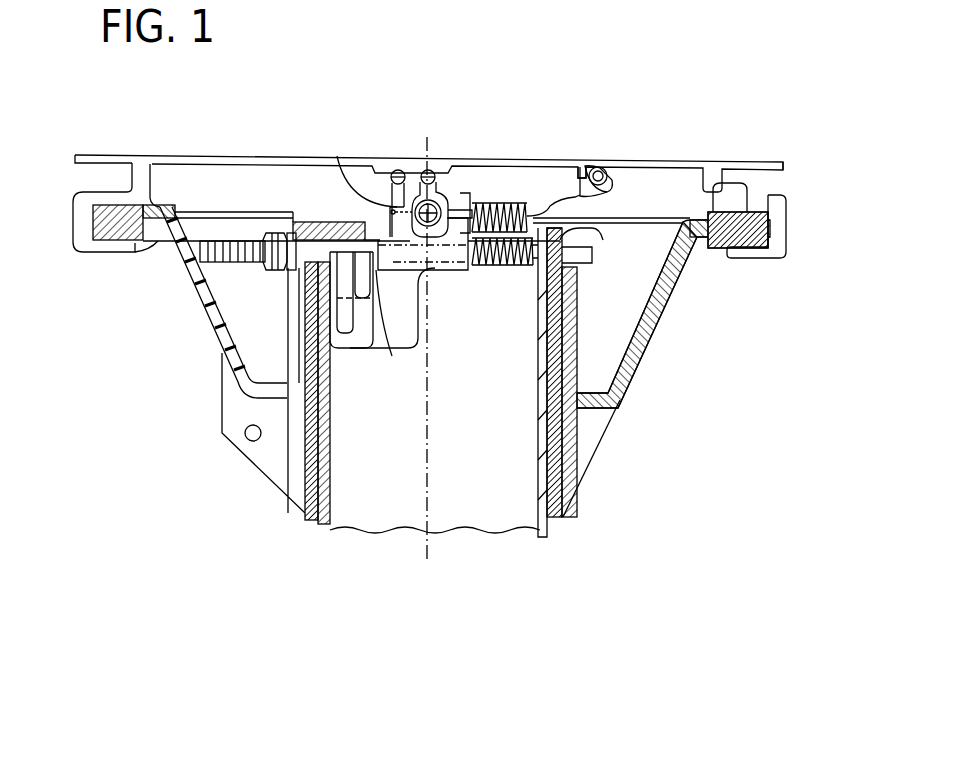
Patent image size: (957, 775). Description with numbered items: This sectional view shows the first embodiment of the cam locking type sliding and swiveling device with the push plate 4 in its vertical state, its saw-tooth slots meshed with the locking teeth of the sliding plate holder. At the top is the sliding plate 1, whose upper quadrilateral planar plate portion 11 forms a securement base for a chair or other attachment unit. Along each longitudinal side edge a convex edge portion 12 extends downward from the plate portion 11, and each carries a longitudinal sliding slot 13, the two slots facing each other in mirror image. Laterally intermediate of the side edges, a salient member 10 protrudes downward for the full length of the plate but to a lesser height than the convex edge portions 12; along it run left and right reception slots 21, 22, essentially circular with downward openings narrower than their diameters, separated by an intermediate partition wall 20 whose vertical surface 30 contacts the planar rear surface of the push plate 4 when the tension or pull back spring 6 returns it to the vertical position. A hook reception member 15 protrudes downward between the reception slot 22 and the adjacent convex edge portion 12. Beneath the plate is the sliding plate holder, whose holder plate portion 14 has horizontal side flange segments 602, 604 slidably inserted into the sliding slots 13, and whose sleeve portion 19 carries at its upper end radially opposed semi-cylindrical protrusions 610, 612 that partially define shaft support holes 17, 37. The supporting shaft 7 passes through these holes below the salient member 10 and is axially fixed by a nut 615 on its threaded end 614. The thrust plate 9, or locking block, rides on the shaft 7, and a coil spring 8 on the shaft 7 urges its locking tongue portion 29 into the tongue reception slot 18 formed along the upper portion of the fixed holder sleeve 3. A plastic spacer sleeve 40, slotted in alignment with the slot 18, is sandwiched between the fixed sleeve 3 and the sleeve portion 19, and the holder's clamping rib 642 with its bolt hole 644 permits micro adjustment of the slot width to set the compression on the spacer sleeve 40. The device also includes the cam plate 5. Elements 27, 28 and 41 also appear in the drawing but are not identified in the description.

The sliding plate 1 is at (686, 160).
The fixed holder sleeve 3 is at (560, 530).
The push plate 4 is at (385, 203).
The cam plate 5 is at (475, 195).
The tension or pull back spring 6 is at (586, 168).
The supporting shaft 7 is at (205, 252).
The coil spring 8 is at (513, 270).
The thrust plate 9 is at (397, 308).
The salient member 10 is at (470, 190).
The planar plate portion 11 is at (758, 162).
The convex edge portion 12 is at (786, 226).
The sliding slot 13 is at (745, 215).
The holder plate portion 14 is at (683, 263).
The hook reception member 15 is at (622, 160).
The shaft support hole 17 is at (585, 268).
The tongue reception slot 18 is at (295, 308).
The sleeve portion 19 is at (598, 425).
The partition wall 20 is at (424, 170).
The reception slot 21 is at (367, 172).
The reception slot 22 is at (445, 195).
The body 27 is at (466, 270).
The spring seat 28 is at (528, 268).
The locking tongue portion 29 is at (345, 348).
The vertical surface 30 is at (410, 172).
The shaft support hole 37 is at (285, 212).
The plastic spacer sleeve 40 is at (318, 505).
The plate 41 is at (380, 337).
The horizontal side flange segment 602 is at (147, 252).
The horizontal side flange segment 604 is at (715, 205).
The semi-cylindrical protrusion 610 is at (343, 222).
The semi-cylindrical protrusion 612 is at (593, 252).
The threaded end 614 is at (203, 265).
The nut 615 is at (273, 273).
The clamping rib 642 is at (257, 473).
The bolt hole 644 is at (247, 440).